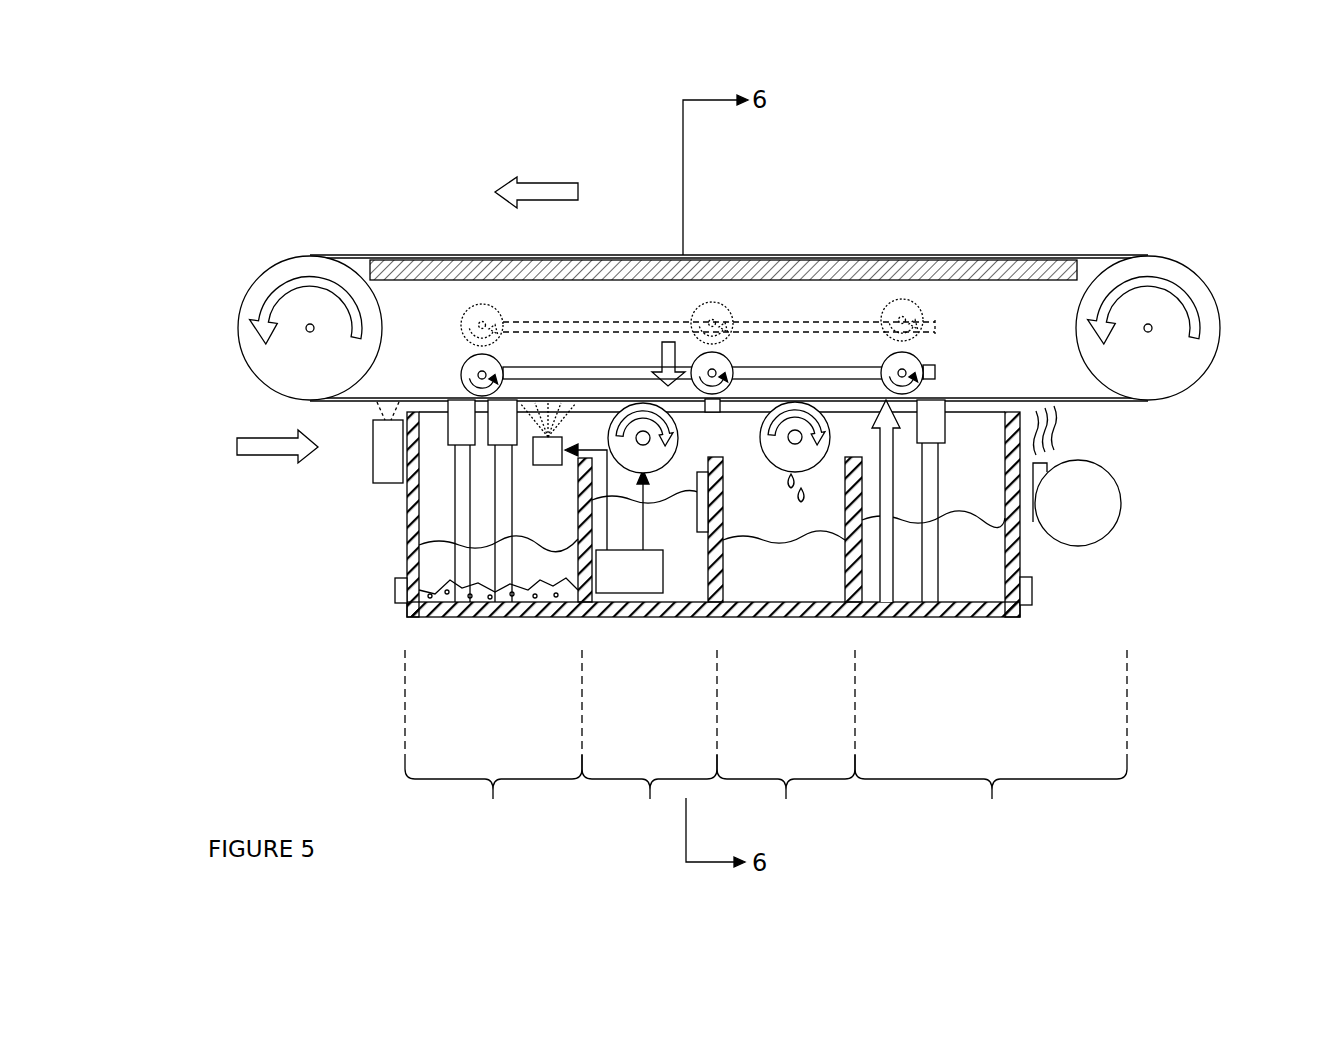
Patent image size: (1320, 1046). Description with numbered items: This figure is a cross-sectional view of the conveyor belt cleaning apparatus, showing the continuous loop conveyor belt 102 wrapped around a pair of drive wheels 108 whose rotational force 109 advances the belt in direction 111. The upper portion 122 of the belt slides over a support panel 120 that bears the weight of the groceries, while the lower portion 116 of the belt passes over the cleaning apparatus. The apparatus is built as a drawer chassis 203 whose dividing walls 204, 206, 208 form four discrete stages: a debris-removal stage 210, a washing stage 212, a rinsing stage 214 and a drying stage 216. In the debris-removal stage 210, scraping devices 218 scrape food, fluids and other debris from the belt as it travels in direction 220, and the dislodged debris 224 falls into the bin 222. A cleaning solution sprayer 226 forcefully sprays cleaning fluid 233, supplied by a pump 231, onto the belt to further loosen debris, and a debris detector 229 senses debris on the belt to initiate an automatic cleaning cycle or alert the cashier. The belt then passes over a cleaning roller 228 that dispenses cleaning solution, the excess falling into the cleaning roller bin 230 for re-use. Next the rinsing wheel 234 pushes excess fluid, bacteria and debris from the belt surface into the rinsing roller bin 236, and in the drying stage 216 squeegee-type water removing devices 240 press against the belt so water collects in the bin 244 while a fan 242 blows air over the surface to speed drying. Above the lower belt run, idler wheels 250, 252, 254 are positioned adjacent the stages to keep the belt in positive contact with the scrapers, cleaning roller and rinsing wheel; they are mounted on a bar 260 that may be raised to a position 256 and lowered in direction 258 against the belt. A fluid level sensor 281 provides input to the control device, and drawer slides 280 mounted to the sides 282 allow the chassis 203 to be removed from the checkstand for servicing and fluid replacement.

The conveyor belt 102 is at (966, 255).
The drive wheels 108 is at (292, 365).
The rotational force 109 is at (288, 285).
The direction 111 is at (540, 190).
The lower portion 116 is at (1103, 399).
The support panel 120 is at (395, 257).
The upper portion 122 is at (353, 255).
The drawer chassis 203 is at (447, 625).
The dividing wall 204 is at (560, 600).
The dividing wall 206 is at (723, 555).
The dividing wall 208 is at (865, 553).
The debris-removal stage 210 is at (493, 797).
The washing stage 212 is at (649, 797).
The rinsing stage 214 is at (786, 797).
The drying stage 216 is at (991, 797).
The scraping devices 218 is at (507, 430).
The direction 220 is at (270, 450).
The bin 222 is at (420, 575).
The dislodged debris 224 is at (415, 610).
The cleaning solution sprayer 226 is at (523, 573).
The cleaning roller 228 is at (622, 410).
The debris detector 229 is at (383, 463).
The cleaning roller bin 230 is at (675, 583).
The pump 231 is at (618, 593).
The cleaning fluid 233 is at (690, 580).
The rinsing wheel 234 is at (753, 253).
The rinsing roller bin 236 is at (780, 568).
The water removing devices 240 is at (1099, 541).
The fan 242 is at (1077, 530).
The bin 244 is at (962, 577).
The idler wheel 250 is at (467, 360).
The idler wheel 252 is at (789, 270).
The idler wheel 254 is at (919, 361).
The raised position 256 is at (727, 308).
The lowering direction 258 is at (662, 342).
The bar 260 is at (726, 258).
The drawer slides 280 is at (392, 605).
The fluid level sensor 281 is at (705, 532).
The sides 282 is at (433, 567).